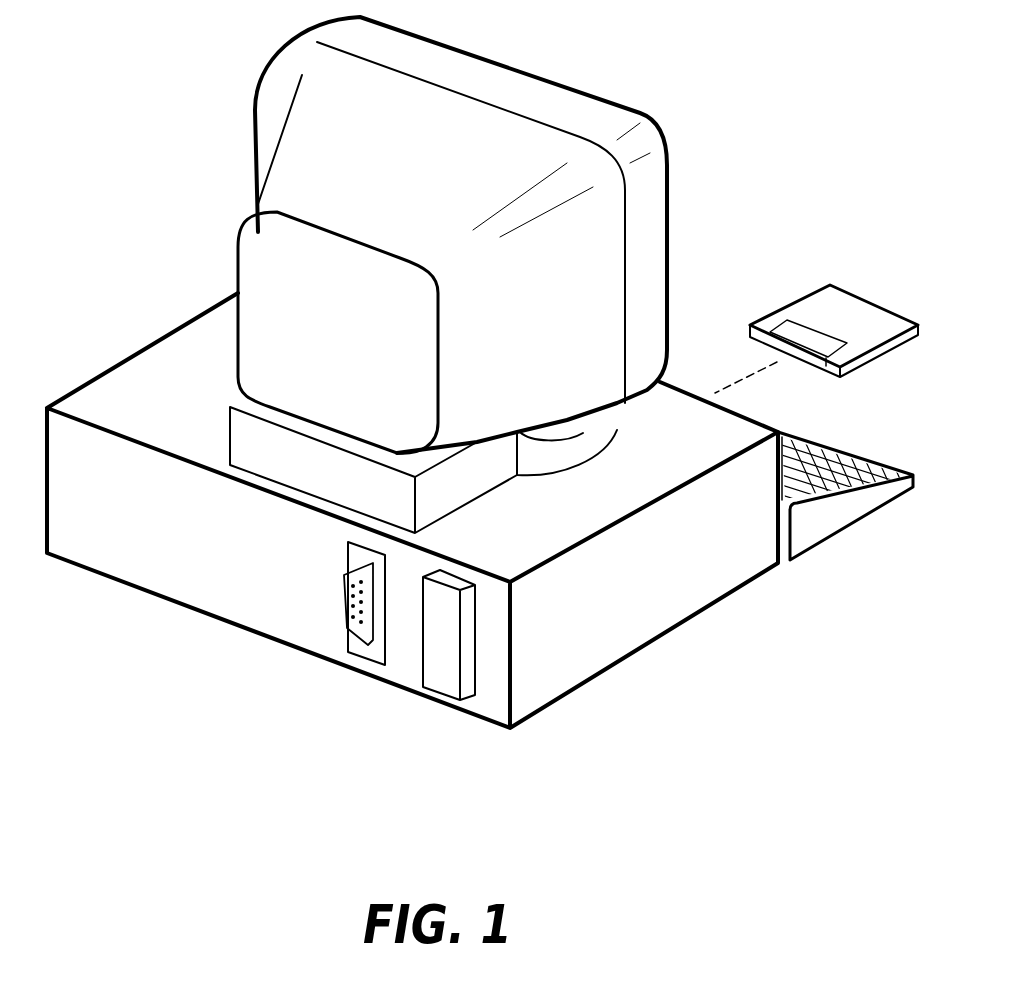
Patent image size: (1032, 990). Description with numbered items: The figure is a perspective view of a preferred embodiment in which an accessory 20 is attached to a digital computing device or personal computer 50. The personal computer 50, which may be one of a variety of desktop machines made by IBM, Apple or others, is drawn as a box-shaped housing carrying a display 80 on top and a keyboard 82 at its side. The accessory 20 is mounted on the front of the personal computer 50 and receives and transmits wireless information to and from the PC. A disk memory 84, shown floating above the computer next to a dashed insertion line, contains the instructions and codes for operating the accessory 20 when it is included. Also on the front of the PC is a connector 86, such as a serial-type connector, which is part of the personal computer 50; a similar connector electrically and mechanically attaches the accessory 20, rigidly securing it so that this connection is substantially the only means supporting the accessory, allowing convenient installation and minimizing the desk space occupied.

The display 80 is at (587, 90).
The personal computer 50 is at (618, 627).
The keyboard 82 is at (818, 522).
The disk memory 84 is at (828, 282).
The connector 86 is at (342, 597).
The accessory 20 is at (430, 668).